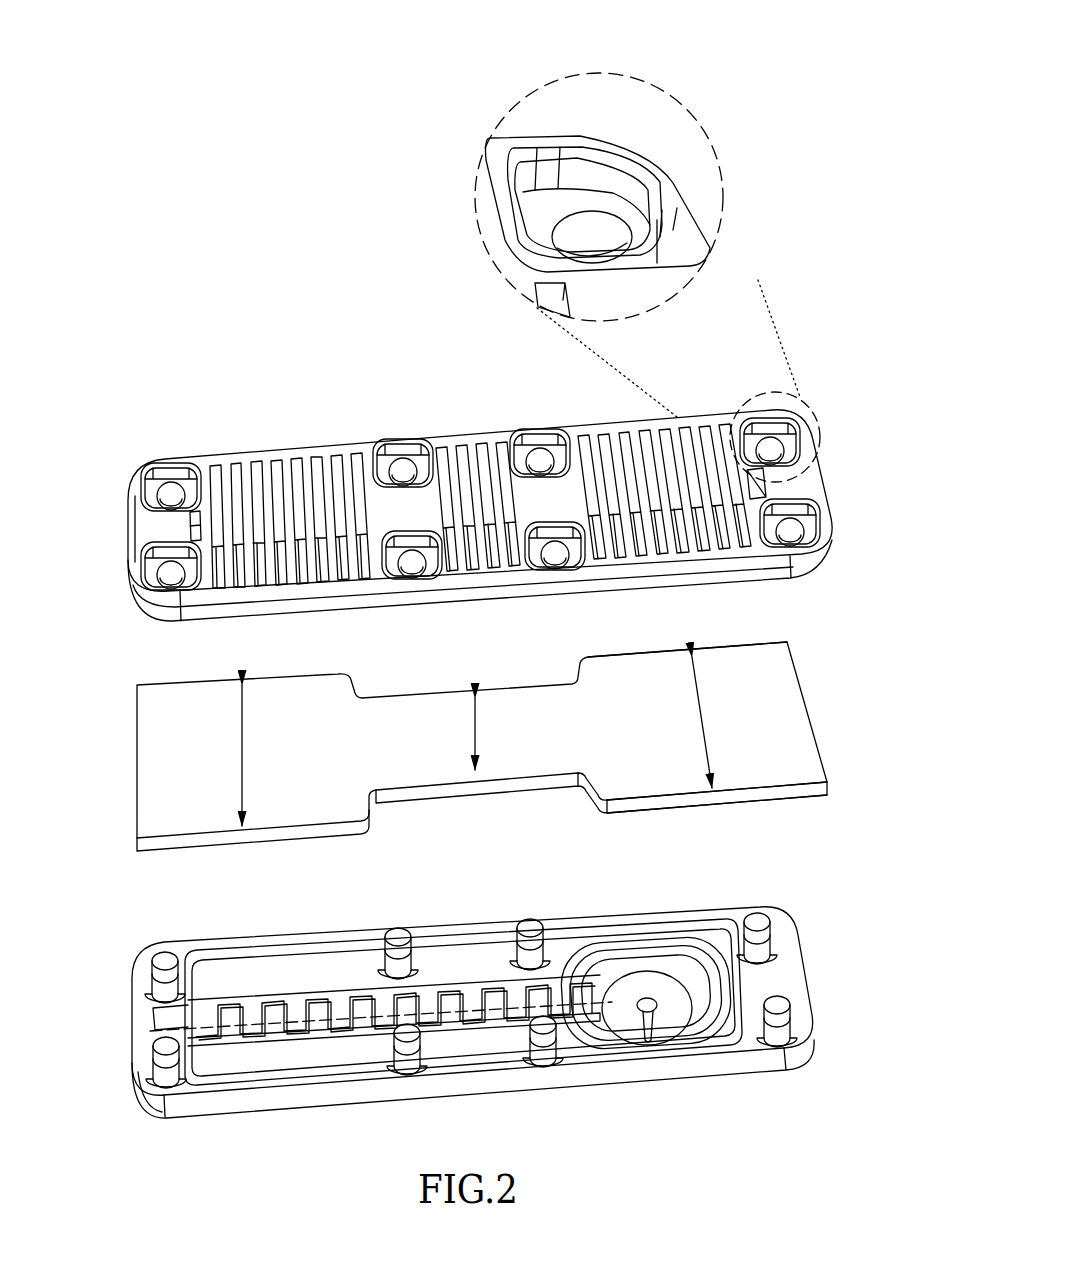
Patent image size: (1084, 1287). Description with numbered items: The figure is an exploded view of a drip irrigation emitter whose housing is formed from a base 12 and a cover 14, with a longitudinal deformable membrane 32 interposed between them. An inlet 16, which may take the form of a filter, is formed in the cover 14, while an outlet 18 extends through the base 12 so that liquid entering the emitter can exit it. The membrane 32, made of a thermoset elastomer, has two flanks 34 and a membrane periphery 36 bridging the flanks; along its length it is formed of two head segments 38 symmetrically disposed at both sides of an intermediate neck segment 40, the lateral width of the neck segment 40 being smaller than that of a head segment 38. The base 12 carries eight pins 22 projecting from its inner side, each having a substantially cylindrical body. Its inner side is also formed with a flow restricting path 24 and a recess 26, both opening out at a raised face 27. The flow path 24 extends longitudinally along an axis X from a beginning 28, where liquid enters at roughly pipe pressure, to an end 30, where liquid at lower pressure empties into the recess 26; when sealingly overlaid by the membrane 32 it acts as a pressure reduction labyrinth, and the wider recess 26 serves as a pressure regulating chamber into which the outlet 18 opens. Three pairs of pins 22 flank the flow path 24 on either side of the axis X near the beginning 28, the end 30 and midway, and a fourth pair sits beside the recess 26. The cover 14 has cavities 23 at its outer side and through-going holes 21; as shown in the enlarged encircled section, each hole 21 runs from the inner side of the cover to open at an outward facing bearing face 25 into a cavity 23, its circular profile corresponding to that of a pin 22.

The base 12 is at (481, 1020).
The cover 14 is at (513, 342).
The inlet 16 is at (275, 485).
The outlet 18 is at (678, 1013).
The through going hole 21 is at (573, 253).
The cavity 23 is at (537, 213).
The bearing face 25 is at (567, 207).
The pin 22 is at (165, 1065).
The flow restricting path 24 is at (350, 990).
The recess 26 is at (654, 996).
The face 27 is at (297, 1000).
The beginning 28 is at (163, 997).
The end 30 is at (593, 1010).
The deformable membrane 32 is at (529, 751).
The flank 34 is at (645, 668).
The membrane periphery 36 is at (773, 798).
The head segment 38 is at (316, 708).
The neck segment 40 is at (416, 713).
The axis X is at (293, 1033).